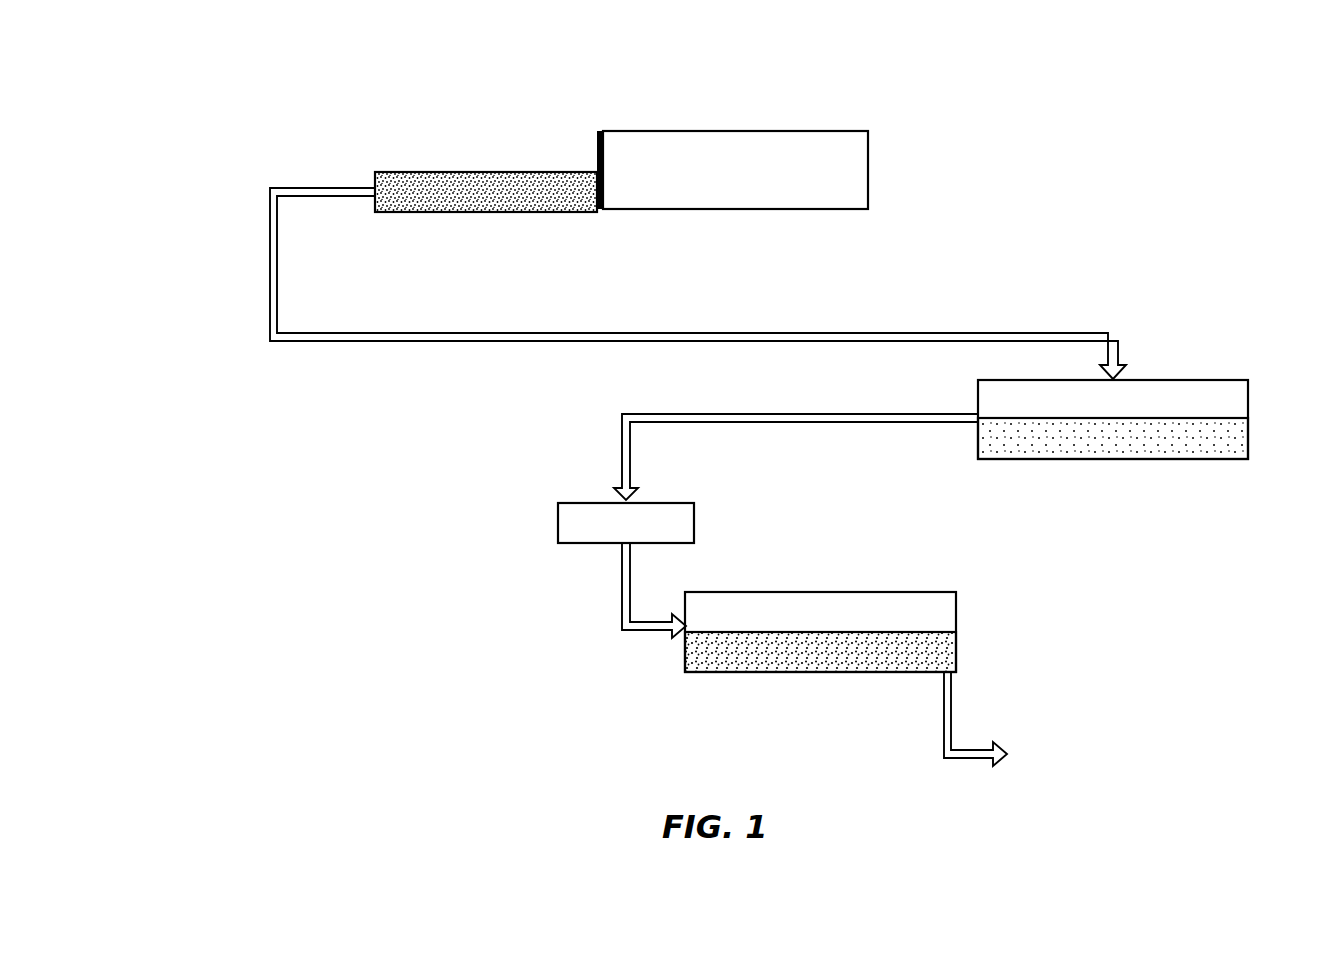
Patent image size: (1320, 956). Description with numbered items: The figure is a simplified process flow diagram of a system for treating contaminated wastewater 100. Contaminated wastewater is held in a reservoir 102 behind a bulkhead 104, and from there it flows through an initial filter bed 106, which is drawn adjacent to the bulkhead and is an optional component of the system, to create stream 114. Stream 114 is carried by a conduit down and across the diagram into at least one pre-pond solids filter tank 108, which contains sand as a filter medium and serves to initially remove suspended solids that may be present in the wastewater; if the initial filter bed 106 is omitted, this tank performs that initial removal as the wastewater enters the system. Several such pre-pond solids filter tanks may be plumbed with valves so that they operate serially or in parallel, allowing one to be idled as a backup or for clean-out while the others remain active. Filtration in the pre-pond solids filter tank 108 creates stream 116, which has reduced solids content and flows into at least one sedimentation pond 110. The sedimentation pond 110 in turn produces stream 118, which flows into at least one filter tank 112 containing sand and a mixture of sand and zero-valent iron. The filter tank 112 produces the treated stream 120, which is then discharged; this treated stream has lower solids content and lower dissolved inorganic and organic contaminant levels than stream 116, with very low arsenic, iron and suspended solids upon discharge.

The system for treating contaminated wastewater 100 is at (256, 104).
The reservoir 102 is at (740, 130).
The bulkhead 104 is at (600, 130).
The initial filter bed 106 is at (490, 172).
The pre-pond solids filter tank 108 is at (1170, 380).
The sedimentation pond 110 is at (557, 525).
The filter tank 112 is at (850, 592).
The stream 114 is at (269, 270).
The stream 116 is at (621, 456).
The stream 118 is at (621, 585).
The treated stream 120 is at (943, 722).